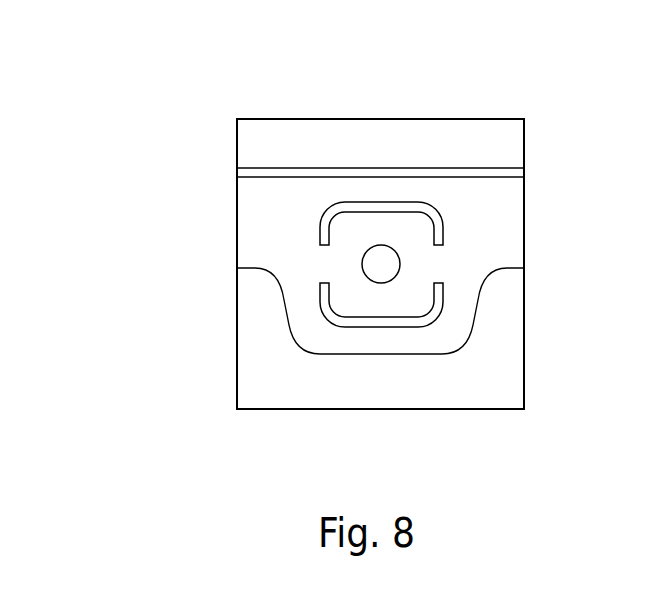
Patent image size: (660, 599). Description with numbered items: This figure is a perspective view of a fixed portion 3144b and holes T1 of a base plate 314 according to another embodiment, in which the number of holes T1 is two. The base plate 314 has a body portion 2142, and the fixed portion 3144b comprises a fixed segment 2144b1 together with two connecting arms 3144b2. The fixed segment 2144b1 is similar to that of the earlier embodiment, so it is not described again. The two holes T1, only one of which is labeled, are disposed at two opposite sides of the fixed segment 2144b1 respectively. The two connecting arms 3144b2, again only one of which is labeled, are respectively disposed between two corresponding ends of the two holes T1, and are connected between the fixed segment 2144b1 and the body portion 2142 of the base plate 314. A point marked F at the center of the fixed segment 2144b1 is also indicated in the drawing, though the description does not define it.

The base plate 314 is at (193, 62).
The body portion 2142 is at (503, 219).
The fixed portion 3144b is at (130, 200).
The fixed segment 2144b1 is at (284, 155).
The connecting arm 3144b2 is at (323, 264).
The hole T1 is at (386, 203).
The force application point / hole F is at (378, 274).